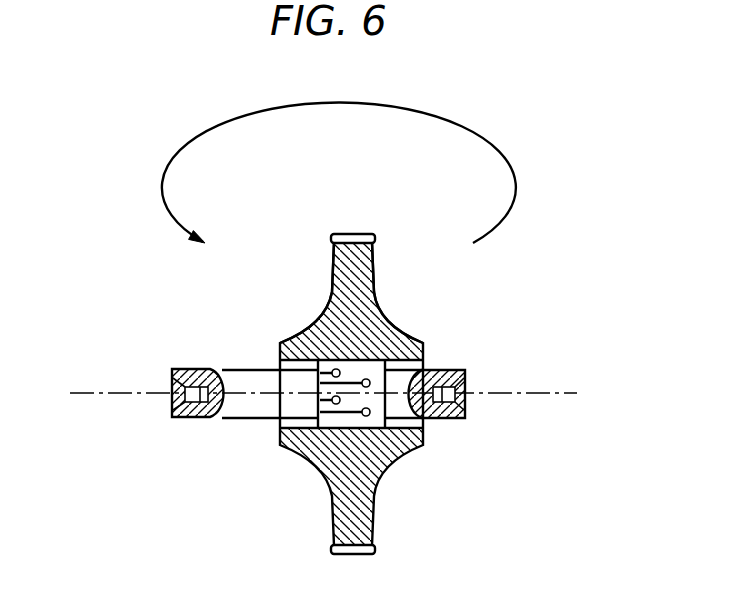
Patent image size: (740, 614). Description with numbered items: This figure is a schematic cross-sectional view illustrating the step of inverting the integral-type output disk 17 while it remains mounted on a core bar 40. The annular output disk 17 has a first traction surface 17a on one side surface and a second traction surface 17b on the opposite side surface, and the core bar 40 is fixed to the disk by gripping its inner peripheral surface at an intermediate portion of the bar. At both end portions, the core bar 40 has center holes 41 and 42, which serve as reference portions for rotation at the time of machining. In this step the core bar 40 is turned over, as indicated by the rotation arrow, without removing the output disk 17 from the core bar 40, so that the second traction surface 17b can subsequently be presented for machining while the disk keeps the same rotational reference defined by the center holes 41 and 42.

The integral-type output disk 17 is at (374, 477).
The first traction surface 17a is at (330, 303).
The second traction surface 17b is at (379, 305).
The core bar 40 is at (247, 405).
The center hole 41 is at (462, 398).
The center hole 42 is at (174, 400).